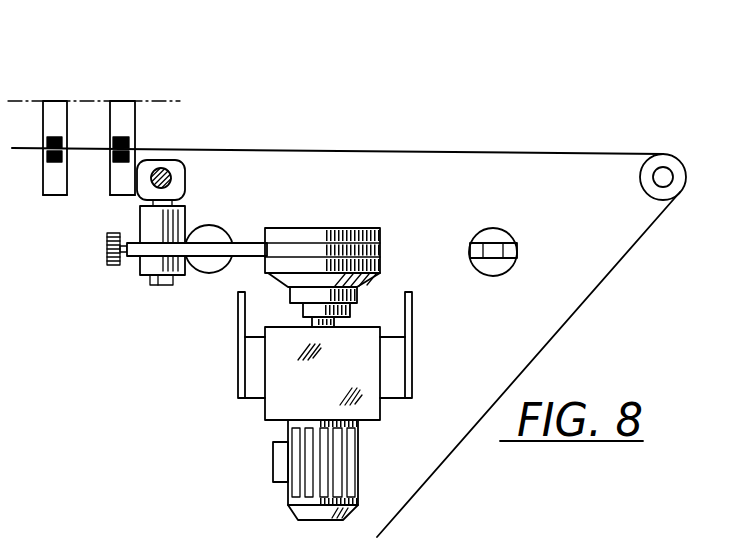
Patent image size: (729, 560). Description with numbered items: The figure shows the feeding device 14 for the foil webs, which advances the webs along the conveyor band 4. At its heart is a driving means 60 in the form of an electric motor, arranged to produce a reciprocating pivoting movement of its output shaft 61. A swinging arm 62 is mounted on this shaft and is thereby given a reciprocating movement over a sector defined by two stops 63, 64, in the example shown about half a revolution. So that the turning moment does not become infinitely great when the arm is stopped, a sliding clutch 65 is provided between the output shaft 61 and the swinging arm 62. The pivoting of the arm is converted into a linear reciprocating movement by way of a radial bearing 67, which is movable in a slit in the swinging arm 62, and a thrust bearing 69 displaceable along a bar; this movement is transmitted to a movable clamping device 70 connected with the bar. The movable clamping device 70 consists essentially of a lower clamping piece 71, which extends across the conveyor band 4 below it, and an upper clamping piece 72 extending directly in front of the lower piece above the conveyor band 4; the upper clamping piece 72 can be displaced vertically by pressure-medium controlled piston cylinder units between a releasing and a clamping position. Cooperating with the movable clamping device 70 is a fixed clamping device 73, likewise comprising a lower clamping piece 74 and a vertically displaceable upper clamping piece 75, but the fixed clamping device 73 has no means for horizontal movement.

The conveyor band 4 is at (276, 151).
The feeding device 14 is at (218, 364).
The driving means 60 is at (266, 461).
The output shaft 61 is at (342, 320).
The swinging arm 62 is at (238, 256).
The stop 63 is at (204, 265).
The stop 64 is at (495, 237).
The sliding clutch 65 is at (260, 278).
The radial bearing 67 is at (148, 265).
The thrust bearing 69 is at (181, 178).
The movable clamping device 70 is at (124, 100).
The lower clamping piece 71 is at (118, 177).
The upper clamping piece 72 is at (122, 125).
The fixed clamping device 73 is at (37, 100).
The lower clamping piece 74 is at (53, 185).
The upper clamping piece 75 is at (53, 120).